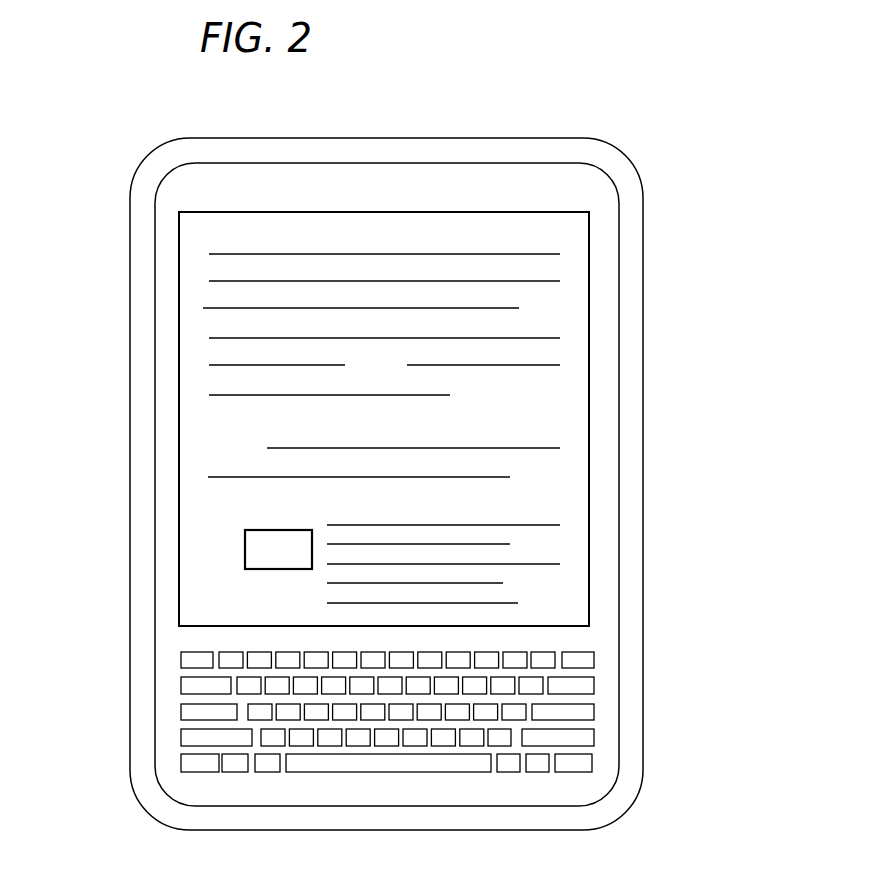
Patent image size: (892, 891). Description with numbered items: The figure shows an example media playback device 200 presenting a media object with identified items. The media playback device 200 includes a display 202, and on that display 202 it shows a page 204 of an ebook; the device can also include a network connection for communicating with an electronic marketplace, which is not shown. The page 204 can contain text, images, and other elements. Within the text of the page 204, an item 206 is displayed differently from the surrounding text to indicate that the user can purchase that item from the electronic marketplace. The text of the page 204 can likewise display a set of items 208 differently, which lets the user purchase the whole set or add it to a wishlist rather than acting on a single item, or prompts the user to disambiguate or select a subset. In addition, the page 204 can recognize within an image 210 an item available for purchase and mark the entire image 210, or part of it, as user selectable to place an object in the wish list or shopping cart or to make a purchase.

The media playback device 200 is at (643, 232).
The display 202 is at (589, 375).
The page 204 is at (377, 253).
The item 206 is at (350, 355).
The set of items 208 is at (200, 443).
The image 210 is at (243, 553).